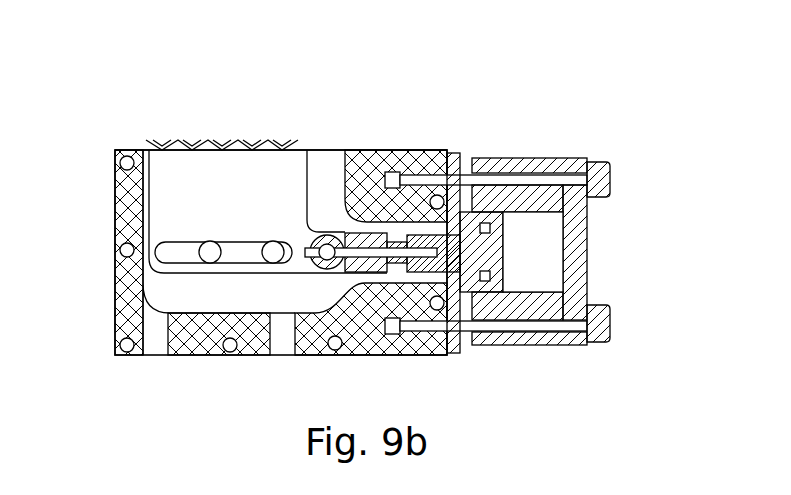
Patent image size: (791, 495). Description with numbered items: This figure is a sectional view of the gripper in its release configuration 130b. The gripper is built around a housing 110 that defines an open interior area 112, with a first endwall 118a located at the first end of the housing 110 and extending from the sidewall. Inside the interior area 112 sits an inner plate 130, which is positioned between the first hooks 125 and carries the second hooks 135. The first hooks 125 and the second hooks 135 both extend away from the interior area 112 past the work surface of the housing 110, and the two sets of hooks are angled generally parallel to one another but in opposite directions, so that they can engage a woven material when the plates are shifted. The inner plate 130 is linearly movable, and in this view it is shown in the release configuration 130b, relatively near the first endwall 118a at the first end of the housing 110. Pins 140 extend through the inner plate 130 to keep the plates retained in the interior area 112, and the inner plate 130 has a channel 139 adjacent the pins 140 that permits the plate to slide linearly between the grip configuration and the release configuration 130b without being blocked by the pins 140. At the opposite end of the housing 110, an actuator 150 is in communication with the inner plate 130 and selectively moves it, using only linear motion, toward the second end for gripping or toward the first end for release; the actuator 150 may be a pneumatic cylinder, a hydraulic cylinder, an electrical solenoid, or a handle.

The housing 110 is at (444, 371).
The interior area 112 is at (346, 138).
The first endwall 118a is at (125, 150).
The first hooks 125 is at (162, 147).
The inner plate 130 is at (267, 169).
The release configuration 130b is at (328, 176).
The second hooks 135 is at (228, 147).
The channel 139 is at (175, 263).
The pins 140 is at (278, 253).
The actuator 150 is at (608, 243).